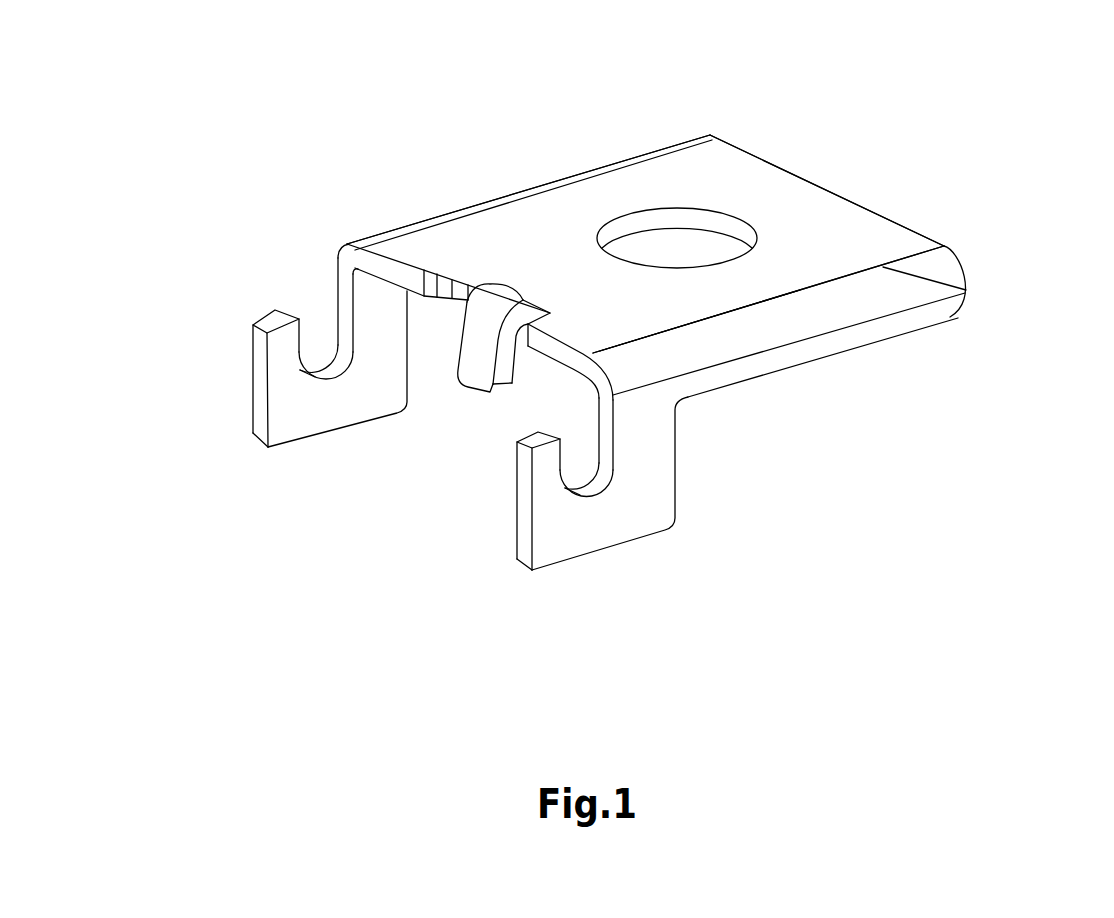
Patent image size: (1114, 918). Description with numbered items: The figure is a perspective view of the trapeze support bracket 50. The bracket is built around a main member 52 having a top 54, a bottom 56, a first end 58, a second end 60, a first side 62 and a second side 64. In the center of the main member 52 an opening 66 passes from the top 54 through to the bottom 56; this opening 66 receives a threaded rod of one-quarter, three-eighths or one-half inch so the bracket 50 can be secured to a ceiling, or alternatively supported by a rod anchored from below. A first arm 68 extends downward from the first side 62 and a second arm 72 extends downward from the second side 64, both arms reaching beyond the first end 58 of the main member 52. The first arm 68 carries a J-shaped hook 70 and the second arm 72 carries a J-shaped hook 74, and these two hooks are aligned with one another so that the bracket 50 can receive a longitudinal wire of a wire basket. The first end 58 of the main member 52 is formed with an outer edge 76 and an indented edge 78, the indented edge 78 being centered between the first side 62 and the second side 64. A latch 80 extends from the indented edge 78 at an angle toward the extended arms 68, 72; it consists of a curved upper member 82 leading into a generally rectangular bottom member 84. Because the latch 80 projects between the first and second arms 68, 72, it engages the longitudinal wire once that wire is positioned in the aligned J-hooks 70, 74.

The trapeze support bracket 50 is at (278, 207).
The main member 52 is at (513, 207).
The top 54 is at (600, 169).
The bottom 56 is at (566, 360).
The first end 58 is at (583, 362).
The second end 60 is at (882, 218).
The first side 62 is at (540, 184).
The second side 64 is at (967, 292).
The opening 66 is at (677, 243).
The first arm 68 is at (343, 278).
The J-shaped hook 70 is at (315, 340).
The second arm 72 is at (823, 343).
The J-shaped hook 74 is at (597, 483).
The outer edge 76 is at (373, 265).
The indented edge 78 is at (440, 273).
The latch 80 is at (493, 298).
The curved upper member 82 is at (485, 315).
The bottom member 84 is at (475, 373).